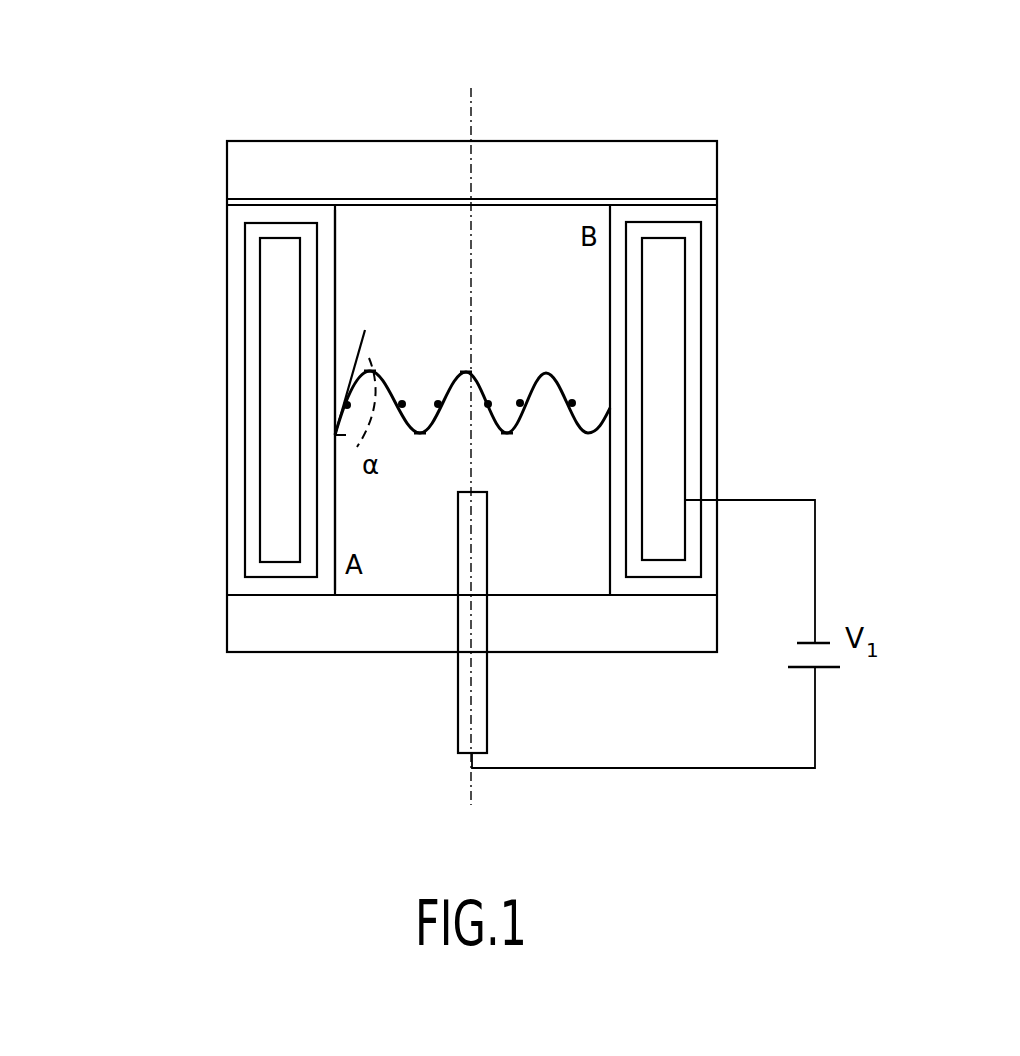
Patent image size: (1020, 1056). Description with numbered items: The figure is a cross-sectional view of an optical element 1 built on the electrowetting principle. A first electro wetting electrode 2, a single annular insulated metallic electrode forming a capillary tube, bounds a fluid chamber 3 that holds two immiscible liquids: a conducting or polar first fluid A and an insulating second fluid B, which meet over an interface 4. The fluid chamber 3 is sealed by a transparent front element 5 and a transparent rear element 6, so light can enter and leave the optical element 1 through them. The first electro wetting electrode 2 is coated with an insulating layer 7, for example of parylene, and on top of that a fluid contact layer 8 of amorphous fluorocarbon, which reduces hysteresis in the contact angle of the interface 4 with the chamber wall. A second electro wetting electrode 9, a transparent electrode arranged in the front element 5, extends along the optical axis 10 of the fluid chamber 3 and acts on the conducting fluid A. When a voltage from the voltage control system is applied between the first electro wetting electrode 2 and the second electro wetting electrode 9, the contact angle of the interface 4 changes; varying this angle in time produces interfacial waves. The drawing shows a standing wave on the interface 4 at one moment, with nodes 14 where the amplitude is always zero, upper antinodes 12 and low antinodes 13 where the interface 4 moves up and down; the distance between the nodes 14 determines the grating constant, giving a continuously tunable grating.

The optical element 1 is at (147, 112).
The first electro wetting electrode 2 is at (280, 462).
The fluid chamber 3 is at (545, 230).
The interface 4 is at (485, 387).
The transparent front element 5 is at (472, 617).
The transparent rear element 6 is at (472, 179).
The insulating layer 7 is at (307, 415).
The fluid contact layer 8 is at (323, 283).
The second electro wetting electrode 9 is at (458, 708).
The optical axis 10 is at (468, 105).
The upper antinodes 12 is at (372, 370).
The low antinodes 13 is at (423, 433).
The nodes 14 is at (402, 404).